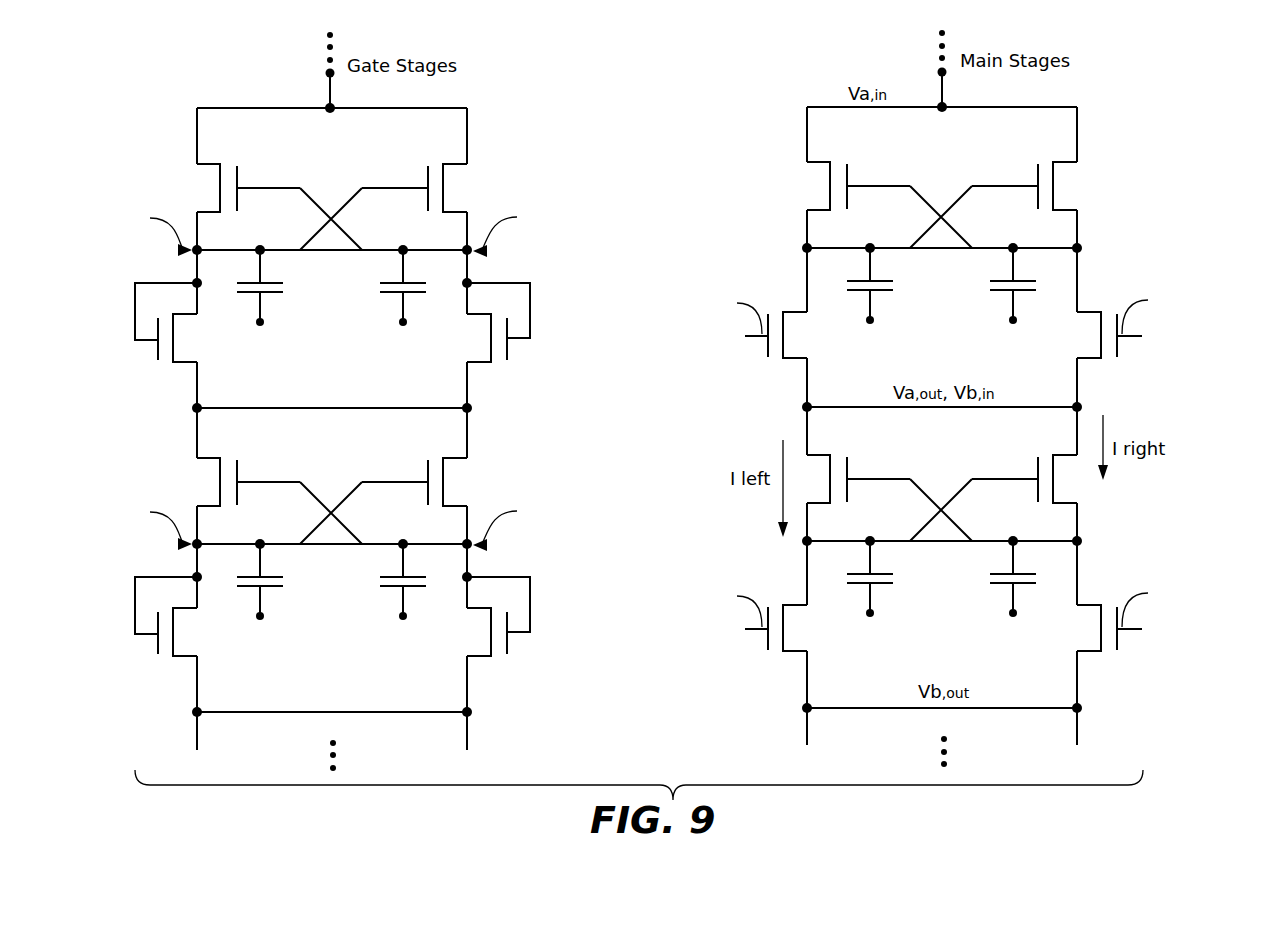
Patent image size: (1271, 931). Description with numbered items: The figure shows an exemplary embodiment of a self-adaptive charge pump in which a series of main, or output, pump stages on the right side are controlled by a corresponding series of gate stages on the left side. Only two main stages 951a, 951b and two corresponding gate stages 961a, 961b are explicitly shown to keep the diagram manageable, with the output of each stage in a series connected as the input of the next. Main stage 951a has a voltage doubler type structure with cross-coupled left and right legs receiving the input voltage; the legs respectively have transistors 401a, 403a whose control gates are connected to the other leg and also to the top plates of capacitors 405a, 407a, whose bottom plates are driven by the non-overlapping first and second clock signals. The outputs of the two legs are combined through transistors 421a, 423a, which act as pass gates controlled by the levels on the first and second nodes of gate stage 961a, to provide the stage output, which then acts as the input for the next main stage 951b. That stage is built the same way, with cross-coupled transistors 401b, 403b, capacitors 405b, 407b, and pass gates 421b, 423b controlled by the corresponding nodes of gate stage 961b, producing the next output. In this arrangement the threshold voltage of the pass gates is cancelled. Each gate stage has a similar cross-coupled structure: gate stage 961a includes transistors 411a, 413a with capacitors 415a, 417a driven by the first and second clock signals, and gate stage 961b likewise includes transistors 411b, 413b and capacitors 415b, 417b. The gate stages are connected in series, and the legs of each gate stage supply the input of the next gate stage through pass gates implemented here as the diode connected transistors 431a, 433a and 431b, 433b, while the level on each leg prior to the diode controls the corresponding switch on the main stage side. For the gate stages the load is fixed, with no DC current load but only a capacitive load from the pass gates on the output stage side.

The transistor 411a is at (212, 164).
The transistor 413a is at (452, 164).
The capacitor 415a is at (272, 294).
The capacitor 417a is at (392, 283).
The diode connected transistor 431a is at (187, 365).
The diode connected transistor 433a is at (515, 345).
The gate stage 961a is at (385, 260).
The transistor 411b is at (212, 458).
The transistor 413b is at (452, 458).
The capacitor 415b is at (272, 588).
The capacitor 417b is at (392, 577).
The diode connected transistor 431b is at (187, 659).
The diode connected transistor 433b is at (515, 639).
The gate stage 961b is at (385, 562).
The transistor 401a is at (822, 162).
The transistor 403a is at (1062, 162).
The capacitor 405a is at (882, 292).
The capacitor 407a is at (1002, 281).
The transistor 421a is at (795, 362).
The transistor 423a is at (1122, 358).
The main stage 951a is at (982, 259).
The transistor 401b is at (822, 455).
The transistor 403b is at (1062, 455).
The capacitor 405b is at (882, 585).
The capacitor 407b is at (1002, 574).
The transistor 421b is at (795, 655).
The transistor 423b is at (1122, 651).
The main stage 951b is at (982, 560).